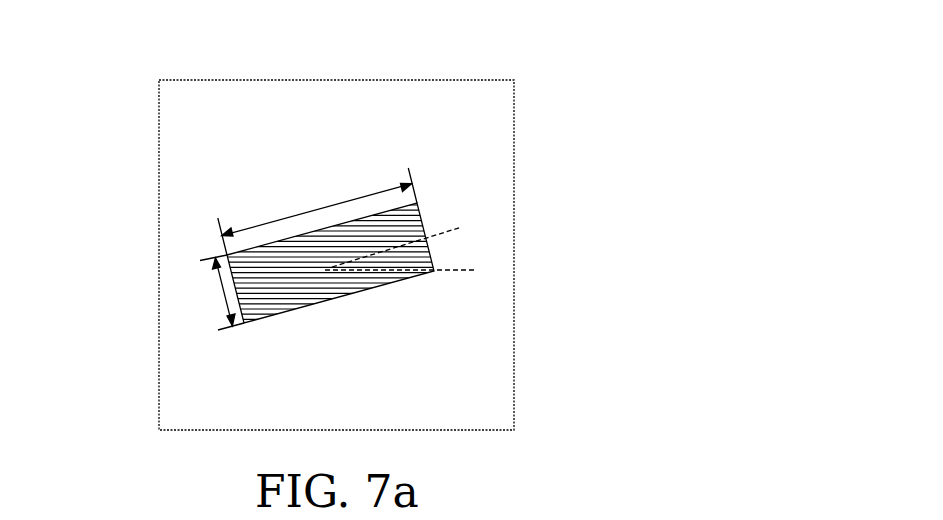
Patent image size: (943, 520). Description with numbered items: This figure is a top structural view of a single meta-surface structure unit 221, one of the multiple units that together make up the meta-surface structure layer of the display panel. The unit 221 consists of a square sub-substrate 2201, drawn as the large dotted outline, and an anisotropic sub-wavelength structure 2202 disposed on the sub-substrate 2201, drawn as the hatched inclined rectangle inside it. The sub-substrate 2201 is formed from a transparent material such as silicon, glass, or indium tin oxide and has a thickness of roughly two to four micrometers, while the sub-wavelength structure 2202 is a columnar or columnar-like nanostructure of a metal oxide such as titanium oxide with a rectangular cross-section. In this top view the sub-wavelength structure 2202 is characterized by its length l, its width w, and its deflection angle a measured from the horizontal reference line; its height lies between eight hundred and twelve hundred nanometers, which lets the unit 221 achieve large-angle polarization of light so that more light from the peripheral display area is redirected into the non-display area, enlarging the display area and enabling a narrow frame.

The meta-surface structure unit 221 is at (149, 56).
The sub-substrate 2201 is at (397, 123).
The anisotropic sub-wavelength structure 2202 is at (420, 213).